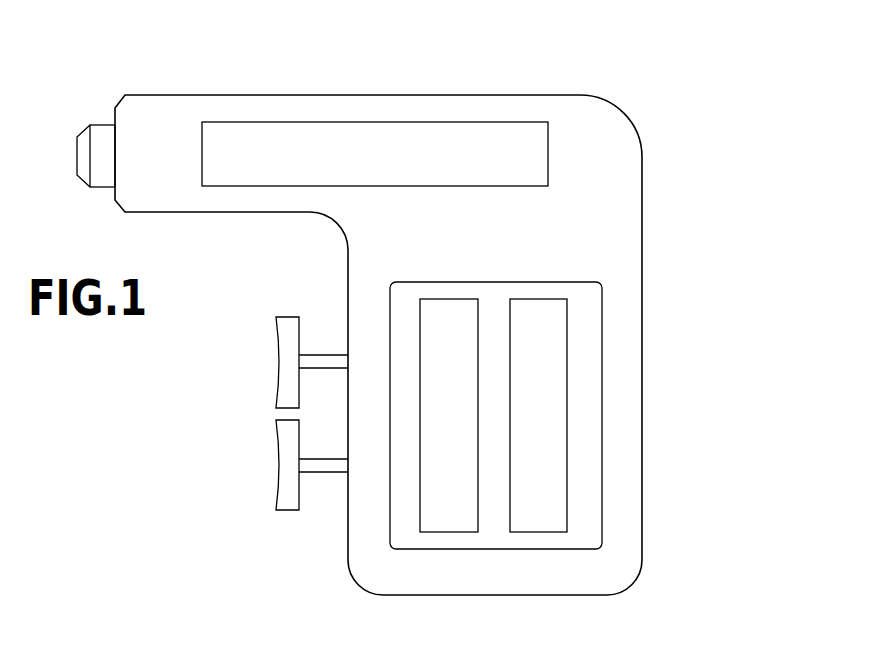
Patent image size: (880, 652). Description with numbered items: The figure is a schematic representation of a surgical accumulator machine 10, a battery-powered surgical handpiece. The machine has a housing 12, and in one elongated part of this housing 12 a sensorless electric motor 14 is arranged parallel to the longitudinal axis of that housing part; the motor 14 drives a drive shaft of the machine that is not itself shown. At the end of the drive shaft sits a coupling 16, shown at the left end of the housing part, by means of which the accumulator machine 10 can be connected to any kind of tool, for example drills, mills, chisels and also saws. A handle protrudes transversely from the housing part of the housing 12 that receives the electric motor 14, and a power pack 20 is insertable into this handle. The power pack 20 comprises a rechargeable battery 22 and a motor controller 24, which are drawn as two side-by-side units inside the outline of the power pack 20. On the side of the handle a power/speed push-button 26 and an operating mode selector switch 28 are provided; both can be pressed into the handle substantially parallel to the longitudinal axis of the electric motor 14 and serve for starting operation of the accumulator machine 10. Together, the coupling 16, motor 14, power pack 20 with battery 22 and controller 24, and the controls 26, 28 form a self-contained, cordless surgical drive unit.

The surgical accumulator machine 10 is at (612, 74).
The housing 12 is at (640, 240).
The sensorless electric motor 14 is at (357, 142).
The coupling 16 is at (100, 130).
The power pack 20 is at (590, 472).
The rechargeable battery 22 is at (447, 315).
The motor controller 24 is at (537, 315).
The power/speed push-button 26 is at (288, 443).
The operating mode selector switch 28 is at (284, 343).